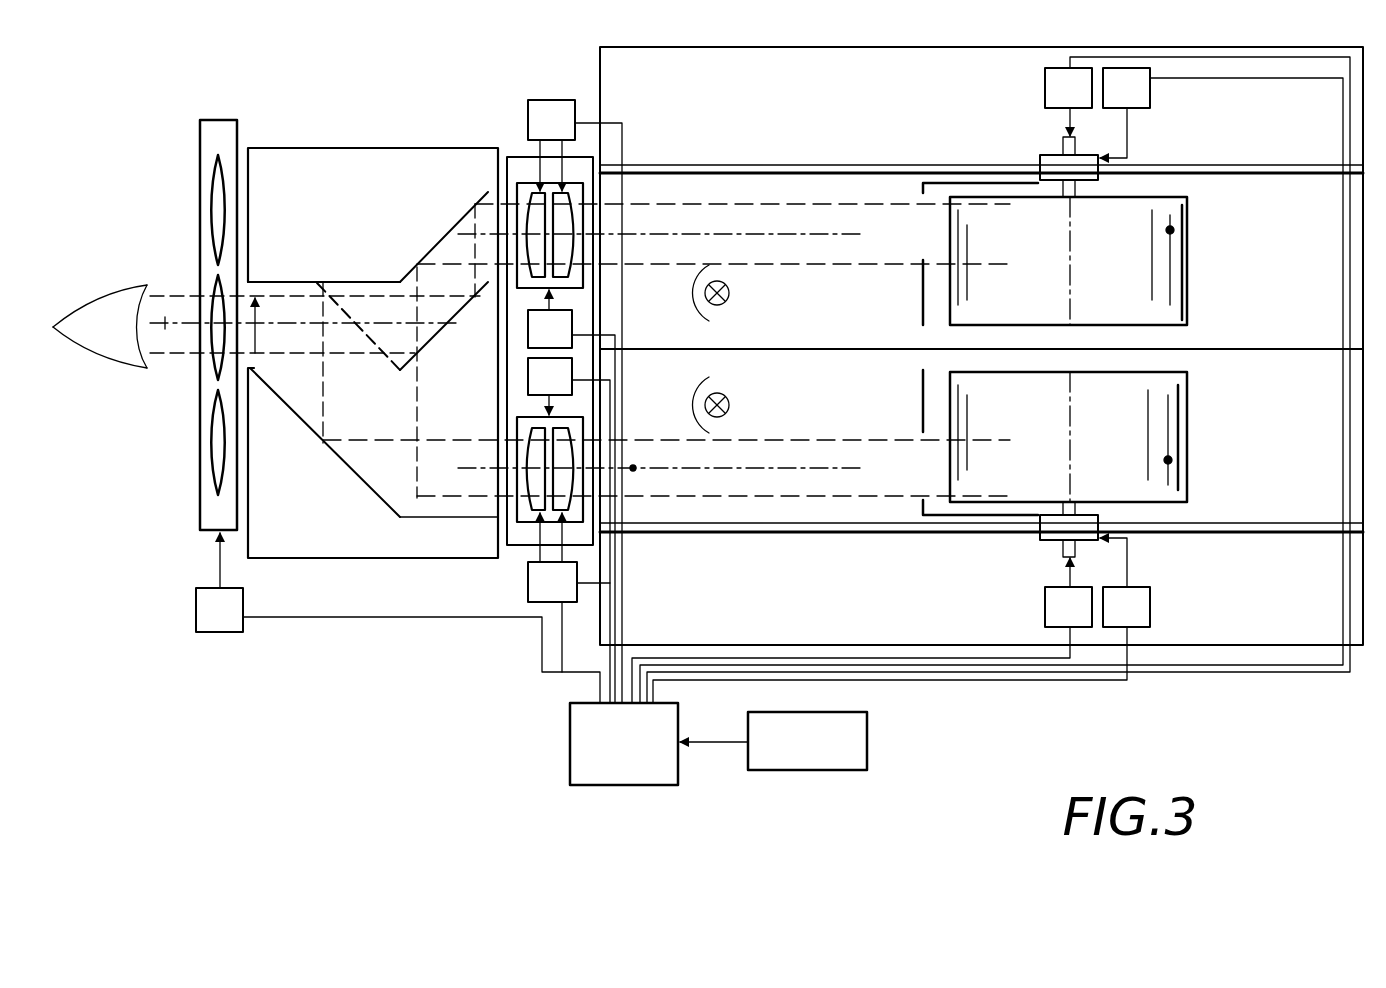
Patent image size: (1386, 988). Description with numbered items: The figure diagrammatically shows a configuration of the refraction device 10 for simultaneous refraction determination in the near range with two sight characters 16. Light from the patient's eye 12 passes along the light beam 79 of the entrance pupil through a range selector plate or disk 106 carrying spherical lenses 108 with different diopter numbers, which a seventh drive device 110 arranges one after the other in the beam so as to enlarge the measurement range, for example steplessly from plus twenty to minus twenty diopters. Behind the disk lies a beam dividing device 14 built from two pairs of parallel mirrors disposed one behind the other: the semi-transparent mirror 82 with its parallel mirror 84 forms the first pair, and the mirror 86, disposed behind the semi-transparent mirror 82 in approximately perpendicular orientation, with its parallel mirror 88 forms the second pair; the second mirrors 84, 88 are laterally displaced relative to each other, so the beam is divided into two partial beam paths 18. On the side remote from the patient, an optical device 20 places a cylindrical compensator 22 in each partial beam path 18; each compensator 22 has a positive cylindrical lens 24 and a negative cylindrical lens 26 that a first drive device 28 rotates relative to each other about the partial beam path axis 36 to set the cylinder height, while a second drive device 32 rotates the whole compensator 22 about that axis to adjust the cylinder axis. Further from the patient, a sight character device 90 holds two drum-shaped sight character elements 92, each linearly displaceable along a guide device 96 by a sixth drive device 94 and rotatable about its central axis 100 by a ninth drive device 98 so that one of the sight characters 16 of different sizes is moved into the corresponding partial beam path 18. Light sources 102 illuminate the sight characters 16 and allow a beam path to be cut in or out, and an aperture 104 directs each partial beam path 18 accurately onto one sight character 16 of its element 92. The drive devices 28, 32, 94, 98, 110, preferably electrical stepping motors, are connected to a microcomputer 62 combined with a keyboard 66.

The refraction device 10 is at (413, 667).
The eye 12 is at (97, 347).
The beam dividing device 14 is at (375, 148).
The sight characters 16 is at (1047, 250).
The partial beam paths 18 is at (705, 203).
The optical device 20 is at (523, 545).
The cylindrical compensator 22 is at (530, 203).
The positive cylindrical lens 24 is at (530, 205).
The negative cylindrical lens 26 is at (578, 203).
The first drive device 28 is at (552, 100).
The second drive device 32 is at (522, 338).
The partial beam path axis 36 is at (690, 252).
The microcomputer 62 is at (624, 744).
The keyboard 66 is at (773, 741).
The light beam of the entrance pupil 79 is at (172, 327).
The semi-transparent mirror 82 is at (342, 310).
The second mirror of first pair 84 is at (325, 443).
The first mirror of second pair 86 is at (458, 314).
The second mirror of second pair 88 is at (445, 240).
The sight character device 90 is at (1003, 47).
The sight character element 92 is at (1190, 275).
The sixth drive device 94 is at (1150, 100).
The guide device 96 is at (885, 167).
The ninth drive device 98 is at (1045, 90).
The central axis 100 is at (1075, 303).
The light sources 102 is at (729, 297).
The aperture 104 is at (923, 262).
The range selector plate or disk 106 is at (200, 515).
The spherical lenses 108 is at (213, 195).
The seventh drive device 110 is at (218, 632).